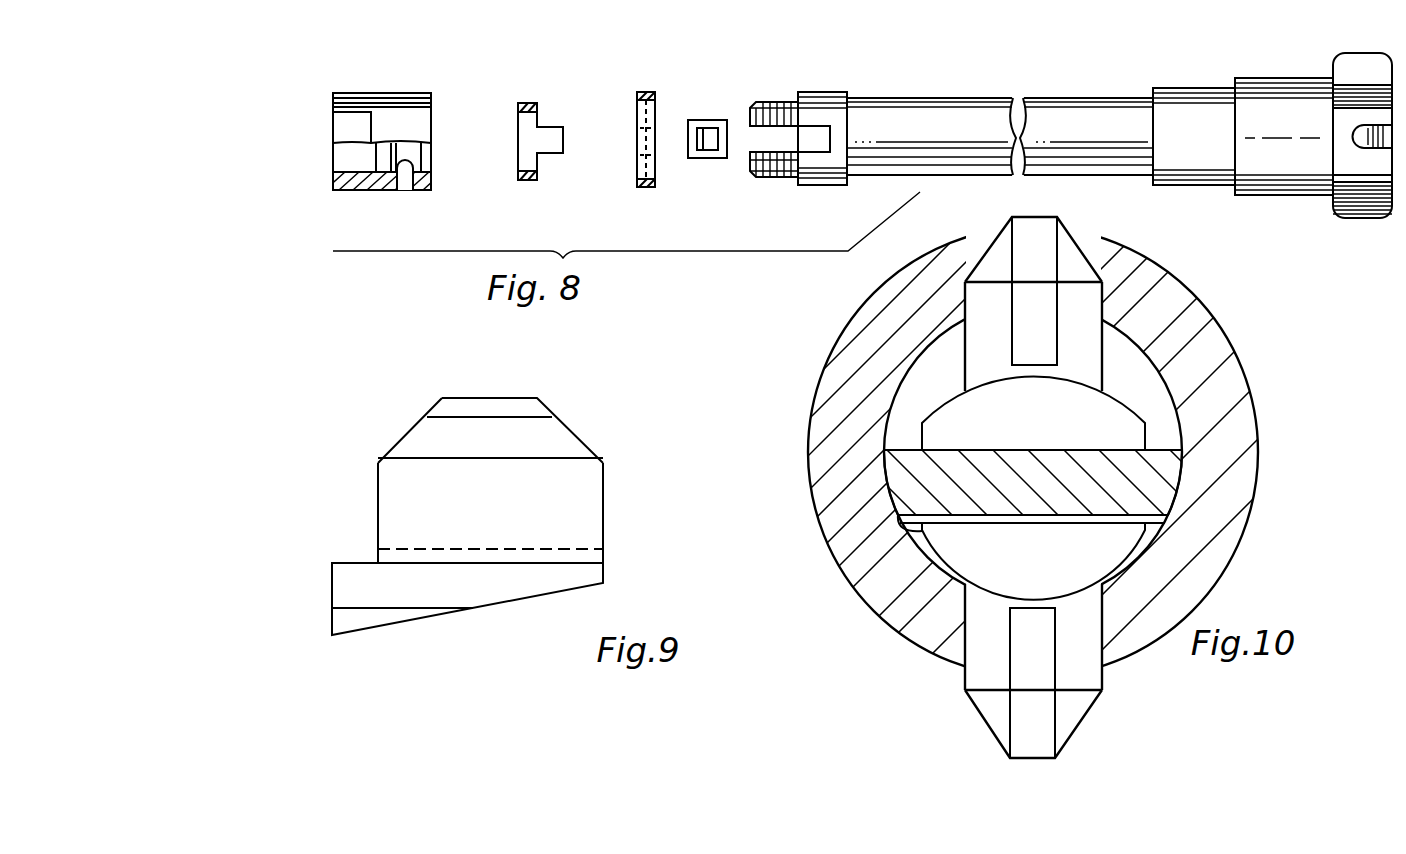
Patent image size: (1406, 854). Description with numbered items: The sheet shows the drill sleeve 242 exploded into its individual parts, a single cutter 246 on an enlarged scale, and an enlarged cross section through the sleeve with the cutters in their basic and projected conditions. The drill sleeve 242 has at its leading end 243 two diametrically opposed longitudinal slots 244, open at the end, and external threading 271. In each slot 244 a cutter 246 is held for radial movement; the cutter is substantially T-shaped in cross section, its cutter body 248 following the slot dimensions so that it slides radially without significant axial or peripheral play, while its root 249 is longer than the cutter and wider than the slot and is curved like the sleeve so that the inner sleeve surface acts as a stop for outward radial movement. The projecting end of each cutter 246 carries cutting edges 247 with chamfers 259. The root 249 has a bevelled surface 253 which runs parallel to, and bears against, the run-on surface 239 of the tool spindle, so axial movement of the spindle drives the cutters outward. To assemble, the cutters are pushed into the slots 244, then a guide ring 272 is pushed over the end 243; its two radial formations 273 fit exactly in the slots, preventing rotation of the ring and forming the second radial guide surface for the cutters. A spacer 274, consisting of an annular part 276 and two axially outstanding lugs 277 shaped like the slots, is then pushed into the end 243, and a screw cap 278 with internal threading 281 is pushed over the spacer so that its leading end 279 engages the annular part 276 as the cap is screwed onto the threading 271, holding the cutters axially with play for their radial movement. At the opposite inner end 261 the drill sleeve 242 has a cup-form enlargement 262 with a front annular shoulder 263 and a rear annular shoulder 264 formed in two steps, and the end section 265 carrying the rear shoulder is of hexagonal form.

In FIG. 8, the screw cap 278 is at (322, 108).
In FIG. 8, the leading end of screw cap 279 is at (400, 98).
In FIG. 8, the internal threading 281 is at (405, 182).
In FIG. 8, the spacer 274 is at (505, 122).
In FIG. 8, the annular part 276 is at (527, 105).
In FIG. 8, the lugs 277 is at (550, 150).
In FIG. 8, the guide ring 272 is at (627, 108).
In FIG. 8, the radial formations 273 is at (634, 147).
In FIG. 10, the radial formations 273 is at (1150, 510).
In FIG. 8, the root 249 is at (688, 128).
In FIG. 9, the root 249 is at (535, 585).
In FIG. 10, the root 249 is at (1003, 426).
In FIG. 8, the cutter body 248 is at (710, 128).
In FIG. 9, the cutter body 248 is at (577, 515).
In FIG. 10, the cutter body 248 is at (1098, 292).
In FIG. 8, the cutter 246 is at (714, 160).
In FIG. 9, the cutter 246 is at (608, 492).
In FIG. 10, the cutter 246 is at (1087, 254).
In FIG. 8, the external threading 271 is at (781, 168).
In FIG. 8, the end of drill sleeve 243 is at (827, 173).
In FIG. 8, the longitudinal slots 244 is at (811, 133).
In FIG. 10, the longitudinal slots 244 is at (968, 292).
In FIG. 8, the drill sleeve 242 is at (1047, 108).
In FIG. 10, the drill sleeve 242 is at (810, 406).
In FIG. 8, the inner end of drill sleeve 261 is at (1178, 108).
In FIG. 8, the cup-form enlargement 262 is at (1282, 108).
In FIG. 8, the front annular shoulder 263 is at (1230, 186).
In FIG. 8, the rear annular shoulder 264 is at (1325, 197).
In FIG. 8, the end section 265 is at (1368, 178).
In FIG. 9, the cutting edges 247 is at (484, 396).
In FIG. 10, the cutting edges 247 is at (1012, 217).
In FIG. 9, the chamfers 259 is at (410, 420).
In FIG. 9, the bevelled surface 253 is at (467, 613).
In FIG. 10, the bevelled surface 253 is at (1090, 452).
In FIG. 10, the run-on surface 239 is at (892, 528).